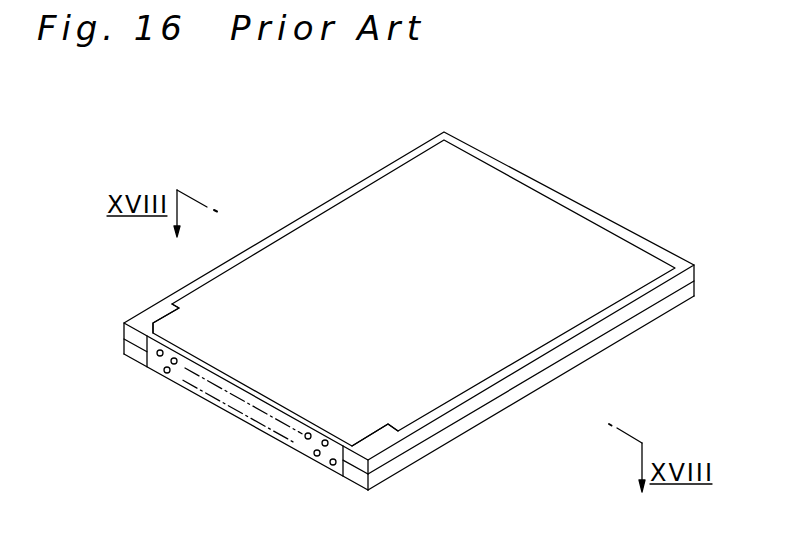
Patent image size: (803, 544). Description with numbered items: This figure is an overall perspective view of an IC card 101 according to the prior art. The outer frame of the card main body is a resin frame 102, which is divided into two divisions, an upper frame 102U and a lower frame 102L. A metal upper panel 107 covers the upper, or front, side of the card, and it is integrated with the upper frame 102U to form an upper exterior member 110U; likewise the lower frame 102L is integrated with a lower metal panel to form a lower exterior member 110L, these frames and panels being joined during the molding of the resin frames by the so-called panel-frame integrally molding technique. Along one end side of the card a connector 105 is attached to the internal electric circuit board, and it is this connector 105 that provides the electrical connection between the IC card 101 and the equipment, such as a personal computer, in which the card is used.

The IC card 101 is at (443, 312).
The frame 102 is at (443, 315).
The upper frame 102U is at (374, 176).
The lower frame 102L is at (621, 337).
The connector 105 is at (245, 421).
The upper panel 107 is at (322, 236).
The upper exterior member 110U is at (300, 155).
The lower exterior member 110L is at (450, 448).